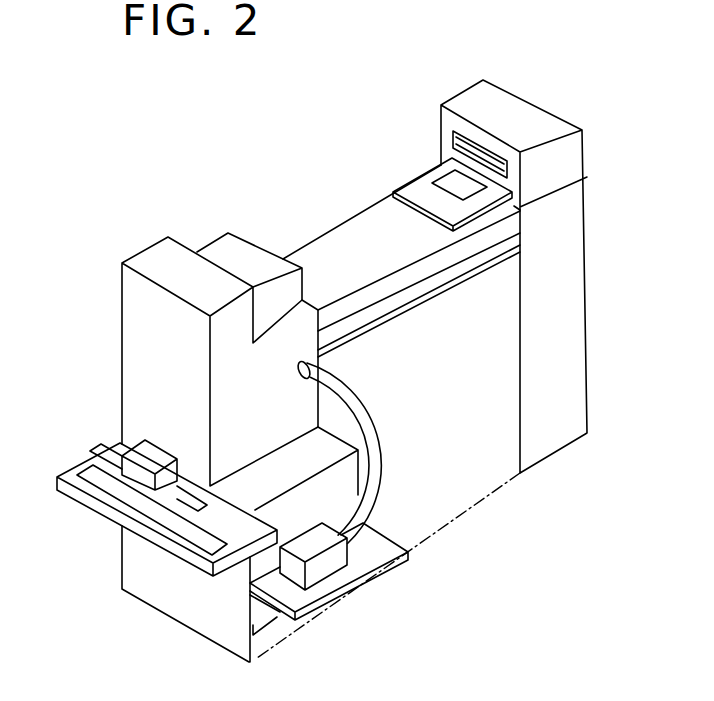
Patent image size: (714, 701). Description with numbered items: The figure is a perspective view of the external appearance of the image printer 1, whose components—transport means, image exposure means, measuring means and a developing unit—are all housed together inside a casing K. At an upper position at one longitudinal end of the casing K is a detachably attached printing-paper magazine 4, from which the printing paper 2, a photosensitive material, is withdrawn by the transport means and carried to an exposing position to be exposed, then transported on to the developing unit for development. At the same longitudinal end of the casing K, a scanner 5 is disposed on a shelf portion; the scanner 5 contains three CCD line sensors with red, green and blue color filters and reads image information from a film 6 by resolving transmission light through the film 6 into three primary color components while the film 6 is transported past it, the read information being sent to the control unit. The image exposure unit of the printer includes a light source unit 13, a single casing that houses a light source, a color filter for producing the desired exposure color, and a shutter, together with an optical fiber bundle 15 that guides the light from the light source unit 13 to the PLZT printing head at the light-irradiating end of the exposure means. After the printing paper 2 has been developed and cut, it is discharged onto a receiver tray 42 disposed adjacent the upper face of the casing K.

The image printer 1 is at (242, 160).
The printing paper 2 is at (447, 182).
The receiver tray 42 is at (412, 185).
The printing-paper magazine 4 is at (238, 255).
The scanner 5 is at (143, 447).
The film 6 is at (102, 442).
The light source unit 13 is at (330, 563).
The optical fiber bundle 15 is at (376, 428).
The casing K is at (477, 478).